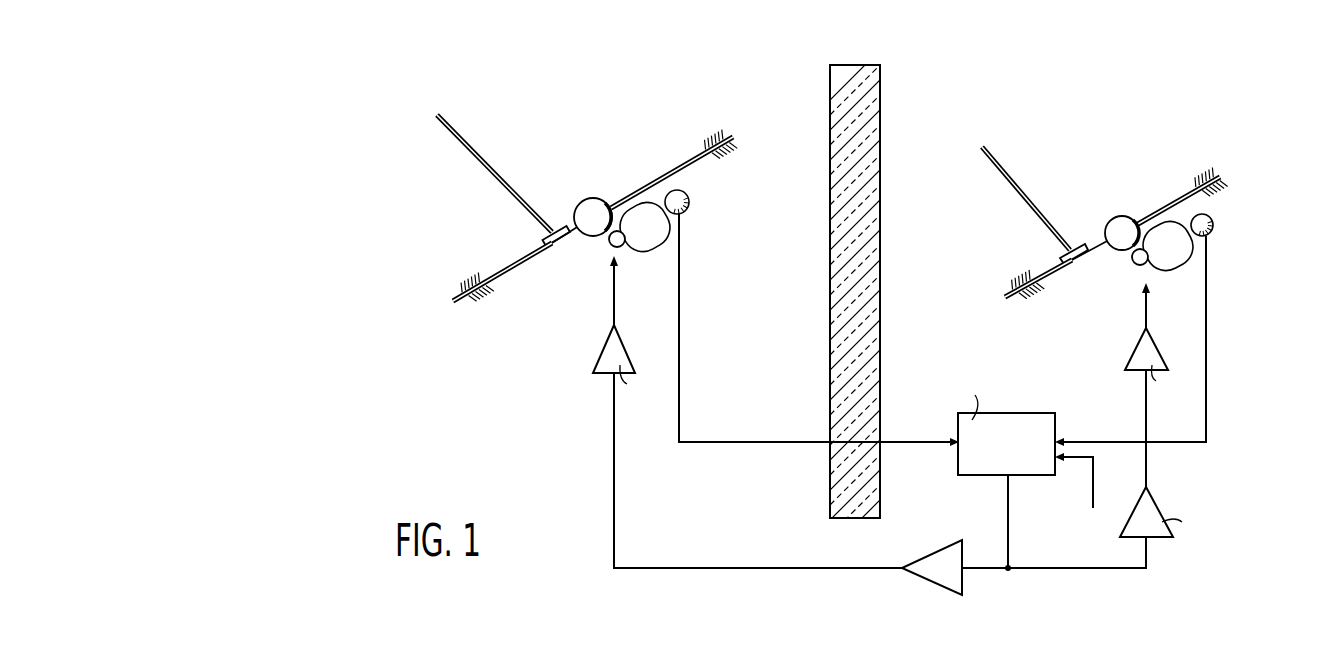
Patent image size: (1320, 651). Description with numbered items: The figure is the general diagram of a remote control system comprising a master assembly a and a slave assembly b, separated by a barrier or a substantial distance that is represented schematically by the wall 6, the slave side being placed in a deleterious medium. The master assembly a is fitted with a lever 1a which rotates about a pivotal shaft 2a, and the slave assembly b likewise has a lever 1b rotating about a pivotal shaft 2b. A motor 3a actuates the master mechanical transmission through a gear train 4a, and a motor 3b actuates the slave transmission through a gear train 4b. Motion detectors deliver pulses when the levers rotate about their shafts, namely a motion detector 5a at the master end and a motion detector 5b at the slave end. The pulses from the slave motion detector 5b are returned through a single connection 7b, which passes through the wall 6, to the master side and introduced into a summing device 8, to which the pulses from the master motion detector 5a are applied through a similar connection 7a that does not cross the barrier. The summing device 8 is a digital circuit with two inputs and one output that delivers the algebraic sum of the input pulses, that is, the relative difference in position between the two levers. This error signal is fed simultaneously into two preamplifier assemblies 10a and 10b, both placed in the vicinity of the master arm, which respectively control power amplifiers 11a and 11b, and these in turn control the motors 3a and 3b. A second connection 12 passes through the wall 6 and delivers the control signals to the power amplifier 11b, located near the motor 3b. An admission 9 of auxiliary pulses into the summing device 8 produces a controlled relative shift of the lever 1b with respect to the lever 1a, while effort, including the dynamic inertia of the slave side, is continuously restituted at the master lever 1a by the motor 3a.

The master assembly a is at (1065, 100).
The slave assembly b is at (573, 94).
The lever 1a is at (993, 158).
The lever 1b is at (473, 148).
The pivotal shaft 2a is at (1050, 270).
The pivotal shaft 2b is at (507, 270).
The motor 3a is at (1140, 280).
The motor 3b is at (612, 254).
The gear train 4a is at (1119, 216).
The gear train 4b is at (589, 198).
The motion detector 5a is at (1270, 213).
The motion detector 5b is at (690, 197).
The wall 6 is at (867, 90).
The connection 7a is at (1207, 380).
The connection 7b is at (680, 337).
The summing device 8 is at (1047, 398).
The admission 9 is at (1076, 495).
The preamplifier assembly 10a is at (1158, 517).
The preamplifier assembly 10b is at (938, 553).
The power amplifier 11a is at (1135, 348).
The power amplifier 11b is at (602, 356).
The second connection 12 is at (652, 480).